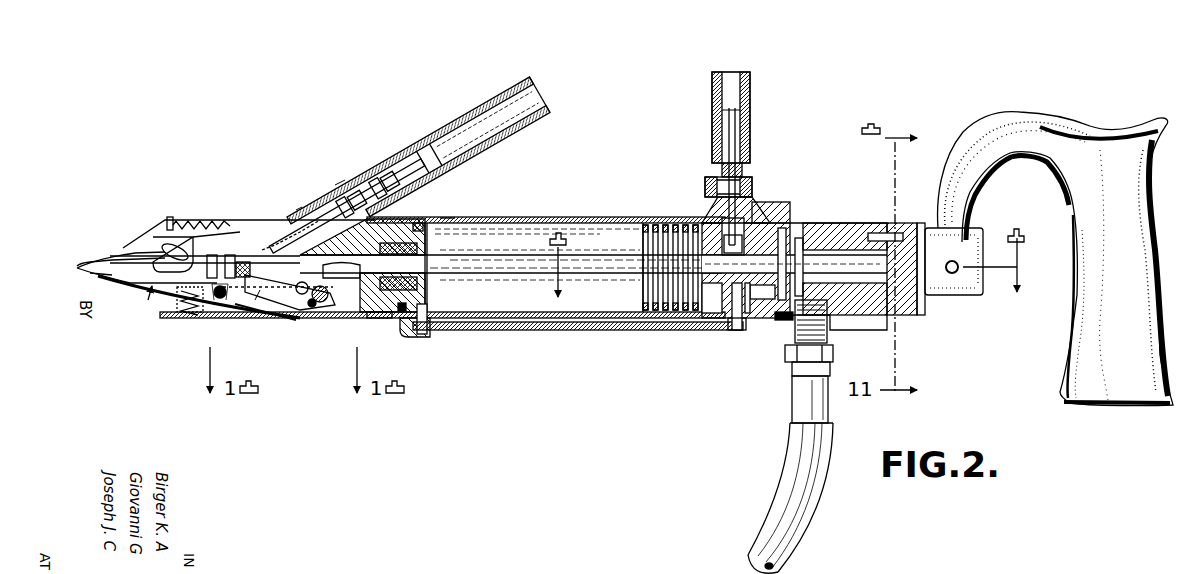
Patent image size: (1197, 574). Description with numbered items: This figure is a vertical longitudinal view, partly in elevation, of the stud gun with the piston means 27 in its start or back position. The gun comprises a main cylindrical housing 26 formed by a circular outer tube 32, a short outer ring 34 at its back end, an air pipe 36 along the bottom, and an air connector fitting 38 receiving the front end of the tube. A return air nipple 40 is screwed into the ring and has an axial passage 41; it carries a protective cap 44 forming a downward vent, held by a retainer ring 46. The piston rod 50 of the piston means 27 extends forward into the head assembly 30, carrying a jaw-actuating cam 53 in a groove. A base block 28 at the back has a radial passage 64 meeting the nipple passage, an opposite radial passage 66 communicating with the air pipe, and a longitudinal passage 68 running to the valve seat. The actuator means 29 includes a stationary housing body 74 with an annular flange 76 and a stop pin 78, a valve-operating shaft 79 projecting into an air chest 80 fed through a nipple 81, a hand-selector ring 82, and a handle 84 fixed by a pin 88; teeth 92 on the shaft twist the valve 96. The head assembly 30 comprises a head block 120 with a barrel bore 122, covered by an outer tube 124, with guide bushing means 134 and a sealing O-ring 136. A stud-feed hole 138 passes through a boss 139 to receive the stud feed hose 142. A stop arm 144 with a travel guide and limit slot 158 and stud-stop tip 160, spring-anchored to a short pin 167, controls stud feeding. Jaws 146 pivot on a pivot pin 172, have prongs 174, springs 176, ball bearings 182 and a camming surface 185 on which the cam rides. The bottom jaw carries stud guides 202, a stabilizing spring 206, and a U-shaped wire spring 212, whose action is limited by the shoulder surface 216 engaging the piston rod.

The main cylindrical housing 26 is at (513, 210).
The piston means 27 is at (627, 306).
The base block 28 is at (762, 204).
The actuator means 29 is at (982, 348).
The head assembly 30 is at (283, 130).
The outer tube 32 is at (447, 218).
The outer ring 34 is at (712, 211).
The air pipe 36 is at (600, 331).
The air connector fitting 38 is at (422, 334).
The return air nipple 40 is at (750, 150).
The axial passage 41 is at (740, 132).
The protective cap 44 is at (712, 190).
The retainer ring 46 is at (722, 174).
The piston rod 50 is at (480, 271).
The jaw-actuating cam 53 is at (336, 274).
The radial passage 64 is at (700, 223).
The radial passage 66 is at (725, 316).
The longitudinal passage 68 is at (768, 318).
The housing body 74 is at (843, 238).
The annular flange 76 is at (793, 331).
The stop pin 78 is at (887, 234).
The valve-operating shaft 79 is at (850, 296).
The air chest 80 is at (775, 236).
The nipple 81 is at (830, 338).
The hand-selector ring 82 is at (915, 228).
The handle 84 is at (1030, 116).
The pin 88 is at (993, 260).
The projecting teeth 92 is at (805, 258).
The valve 96 is at (762, 331).
The head block 120 is at (143, 237).
The barrel bore 122 is at (272, 254).
The outer tube 124 is at (380, 319).
The guide bushing means 134 is at (418, 283).
The sealing O-ring 136 is at (405, 340).
The stud-feed hole 138 is at (300, 212).
The boss 139 is at (331, 190).
The stud feed hose 142 is at (480, 106).
The stop arm 144 is at (228, 227).
The jaws 146 is at (153, 292).
The travel guide and limit slot 158 is at (178, 247).
The stud-stop tip 160 is at (240, 254).
The short pin 167 is at (170, 219).
The pivot pin 172 is at (314, 308).
The prong 174 is at (118, 278).
The compression spring 176 is at (178, 312).
The ball bearing 182 is at (202, 314).
The camming surface 185 is at (149, 302).
The stud guide 202 is at (290, 342).
The stabilizing spring 206 is at (226, 300).
The U-shaped wire spring 212 is at (316, 302).
The shoulder surface 216 is at (293, 306).